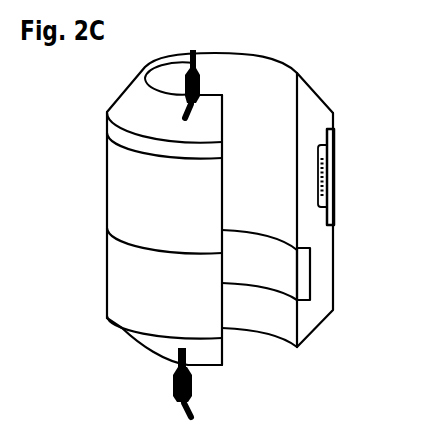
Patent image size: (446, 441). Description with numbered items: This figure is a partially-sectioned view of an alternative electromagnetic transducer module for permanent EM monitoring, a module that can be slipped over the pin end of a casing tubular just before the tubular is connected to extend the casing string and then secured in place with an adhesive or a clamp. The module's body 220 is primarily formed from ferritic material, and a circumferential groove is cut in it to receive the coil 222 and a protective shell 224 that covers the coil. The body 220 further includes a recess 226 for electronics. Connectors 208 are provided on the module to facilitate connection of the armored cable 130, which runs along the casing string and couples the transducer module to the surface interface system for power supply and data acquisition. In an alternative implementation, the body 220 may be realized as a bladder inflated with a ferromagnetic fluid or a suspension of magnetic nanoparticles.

The armored cable 130 is at (190, 53).
The connectors 208 is at (200, 80).
The body 220 is at (322, 120).
The coil 222 is at (333, 170).
The protective shell 224 is at (107, 171).
The recess 226 is at (270, 223).